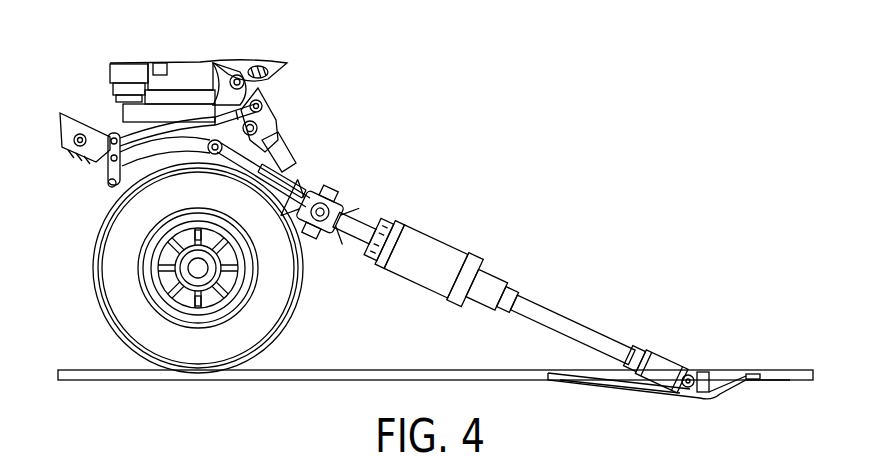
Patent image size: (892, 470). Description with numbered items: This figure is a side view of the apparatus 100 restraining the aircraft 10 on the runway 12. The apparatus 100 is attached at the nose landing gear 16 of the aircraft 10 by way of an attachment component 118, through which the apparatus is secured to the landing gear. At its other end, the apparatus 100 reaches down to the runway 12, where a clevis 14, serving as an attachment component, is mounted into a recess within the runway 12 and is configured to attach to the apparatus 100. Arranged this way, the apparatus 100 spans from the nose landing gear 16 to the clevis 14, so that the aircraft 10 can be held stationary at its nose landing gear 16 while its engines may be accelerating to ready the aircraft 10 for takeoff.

The aircraft 10 is at (312, 105).
The runway 12 is at (371, 370).
The clevis 14 is at (708, 338).
The nose landing gear 16 is at (97, 133).
The apparatus 100 is at (432, 250).
The attachment component 118 is at (352, 192).